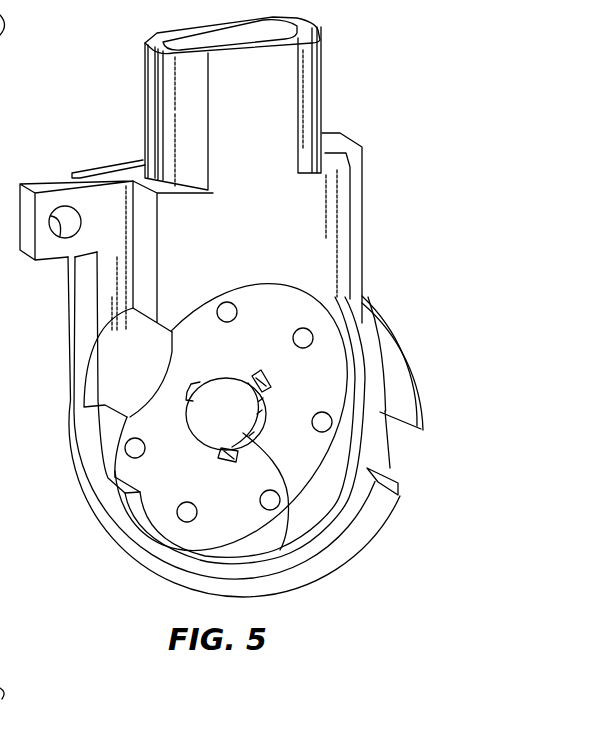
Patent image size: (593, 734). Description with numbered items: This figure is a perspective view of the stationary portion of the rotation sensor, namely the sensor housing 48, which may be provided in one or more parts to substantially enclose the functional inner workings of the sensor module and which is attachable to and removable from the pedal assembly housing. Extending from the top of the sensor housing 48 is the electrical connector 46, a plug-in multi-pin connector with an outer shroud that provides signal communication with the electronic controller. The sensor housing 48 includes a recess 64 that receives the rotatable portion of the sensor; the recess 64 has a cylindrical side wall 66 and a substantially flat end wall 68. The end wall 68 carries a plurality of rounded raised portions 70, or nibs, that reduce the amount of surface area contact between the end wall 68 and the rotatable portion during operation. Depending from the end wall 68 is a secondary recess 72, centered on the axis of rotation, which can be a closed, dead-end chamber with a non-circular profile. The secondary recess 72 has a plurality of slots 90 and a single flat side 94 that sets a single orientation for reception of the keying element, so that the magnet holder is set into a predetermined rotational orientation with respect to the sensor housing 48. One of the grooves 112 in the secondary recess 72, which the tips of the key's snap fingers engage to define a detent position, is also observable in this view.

The electrical connector 46 is at (277, 70).
The sensor housing 48 is at (373, 222).
The recess 64 is at (283, 323).
The cylindrical side wall 66 is at (336, 470).
The end wall 68 is at (332, 483).
The raised portions 70 is at (130, 455).
The secondary recess 72 is at (305, 468).
The slots 90 is at (263, 380).
The flat side 94 is at (220, 380).
The grooves 112 is at (266, 410).